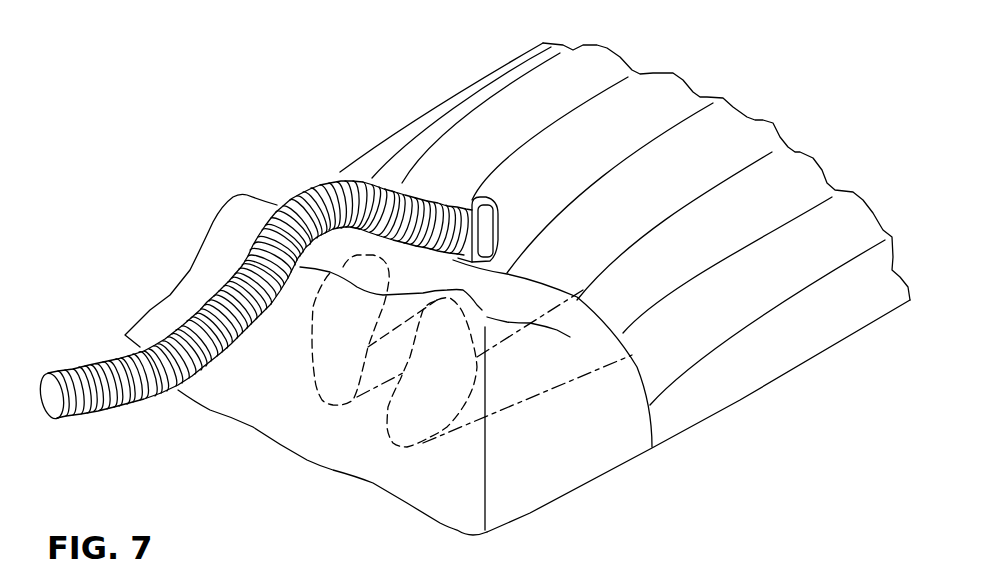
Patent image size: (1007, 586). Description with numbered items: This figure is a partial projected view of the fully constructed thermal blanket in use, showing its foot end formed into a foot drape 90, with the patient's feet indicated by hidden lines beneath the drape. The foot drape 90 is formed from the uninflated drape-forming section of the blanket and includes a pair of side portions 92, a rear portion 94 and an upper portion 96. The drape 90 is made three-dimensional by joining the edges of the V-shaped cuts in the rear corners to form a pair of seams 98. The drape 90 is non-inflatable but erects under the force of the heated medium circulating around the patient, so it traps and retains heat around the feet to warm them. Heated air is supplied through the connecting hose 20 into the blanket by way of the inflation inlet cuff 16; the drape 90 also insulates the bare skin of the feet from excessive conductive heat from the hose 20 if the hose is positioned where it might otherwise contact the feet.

The inflation inlet cuff 16 is at (497, 203).
The connecting hose 20 is at (77, 370).
The foot drape 90 is at (536, 516).
The side portions 92 is at (627, 450).
The rear portion 94 is at (210, 396).
The upper portion 96 is at (252, 203).
The seams 98 is at (482, 497).